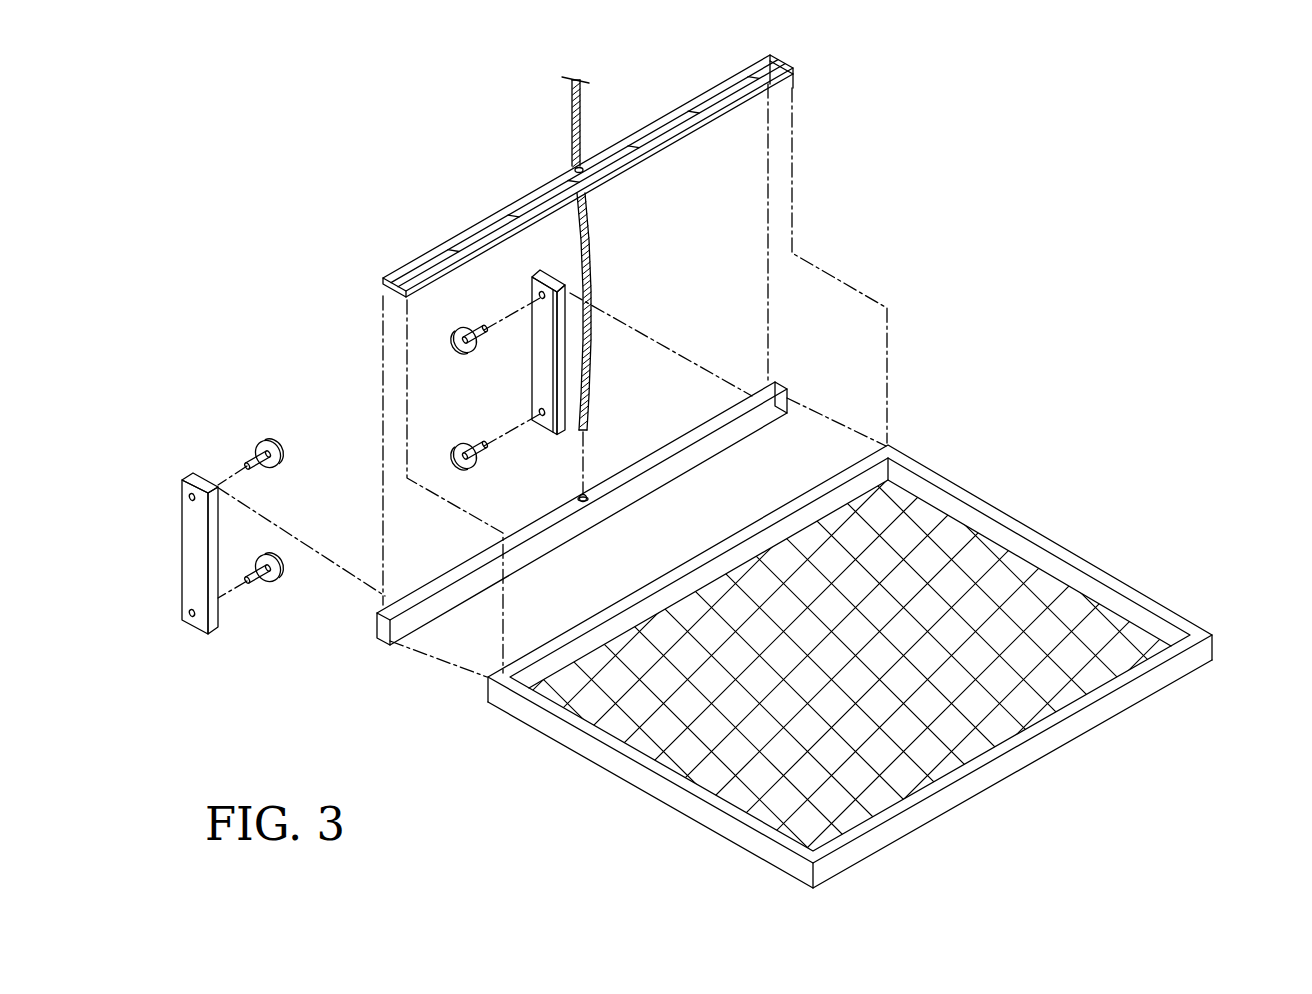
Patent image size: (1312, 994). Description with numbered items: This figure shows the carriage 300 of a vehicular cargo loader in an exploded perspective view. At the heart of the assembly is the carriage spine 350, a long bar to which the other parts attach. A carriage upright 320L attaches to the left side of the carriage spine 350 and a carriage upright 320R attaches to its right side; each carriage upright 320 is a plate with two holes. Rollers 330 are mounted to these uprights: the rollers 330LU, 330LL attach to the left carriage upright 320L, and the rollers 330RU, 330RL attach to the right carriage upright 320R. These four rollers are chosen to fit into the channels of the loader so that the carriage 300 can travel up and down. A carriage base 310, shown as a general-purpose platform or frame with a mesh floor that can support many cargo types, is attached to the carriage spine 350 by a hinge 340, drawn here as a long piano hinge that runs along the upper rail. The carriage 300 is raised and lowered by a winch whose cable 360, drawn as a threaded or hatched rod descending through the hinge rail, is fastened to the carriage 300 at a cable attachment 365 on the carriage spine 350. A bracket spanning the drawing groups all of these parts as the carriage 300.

The carriage 300 is at (1200, 893).
The carriage base 310 is at (567, 735).
The carriage upright 320 is at (342, 464).
The carriage upright 320L is at (188, 583).
The carriage upright 320R is at (550, 418).
The rollers 330 is at (389, 454).
The roller 330LU is at (265, 440).
The roller 330LL is at (267, 582).
The roller 330RU is at (478, 325).
The roller 330RL is at (480, 460).
The hinge 340 is at (433, 256).
The carriage spine 350 is at (635, 490).
The cable 360 is at (572, 130).
The cable attachment 365 is at (584, 494).